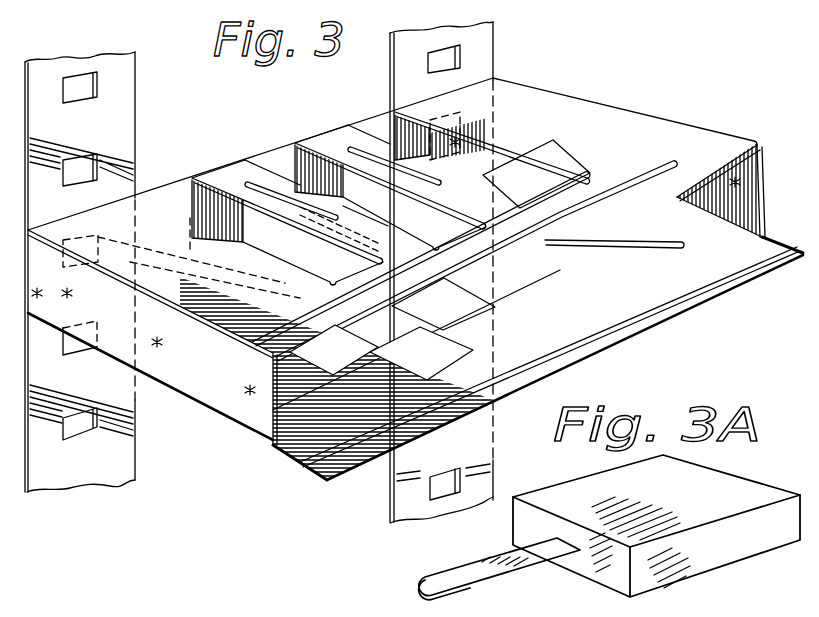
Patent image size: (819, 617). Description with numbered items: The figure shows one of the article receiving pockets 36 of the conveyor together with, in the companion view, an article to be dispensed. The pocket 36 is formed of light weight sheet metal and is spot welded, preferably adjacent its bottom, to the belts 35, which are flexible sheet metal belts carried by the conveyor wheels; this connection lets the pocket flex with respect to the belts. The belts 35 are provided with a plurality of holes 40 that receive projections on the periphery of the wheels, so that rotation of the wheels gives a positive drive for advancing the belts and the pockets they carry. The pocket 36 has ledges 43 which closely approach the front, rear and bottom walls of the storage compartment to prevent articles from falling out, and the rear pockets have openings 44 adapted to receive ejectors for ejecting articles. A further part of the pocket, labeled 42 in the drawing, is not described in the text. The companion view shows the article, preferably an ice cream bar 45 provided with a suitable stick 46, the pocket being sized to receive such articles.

In FIG. 3, the belt 35 is at (122, 130).
In FIG. 3, the article receiving pocket 36 is at (626, 120).
In FIG. 3, the hole 40 is at (80, 92).
In FIG. 3, the tab 42 is at (38, 305).
In FIG. 3, the ledge 43 is at (635, 322).
In FIG. 3, the opening 44 is at (220, 185).
In FIG. 3A, the ice cream bar 45 is at (688, 567).
In FIG. 3A, the stick 46 is at (505, 566).